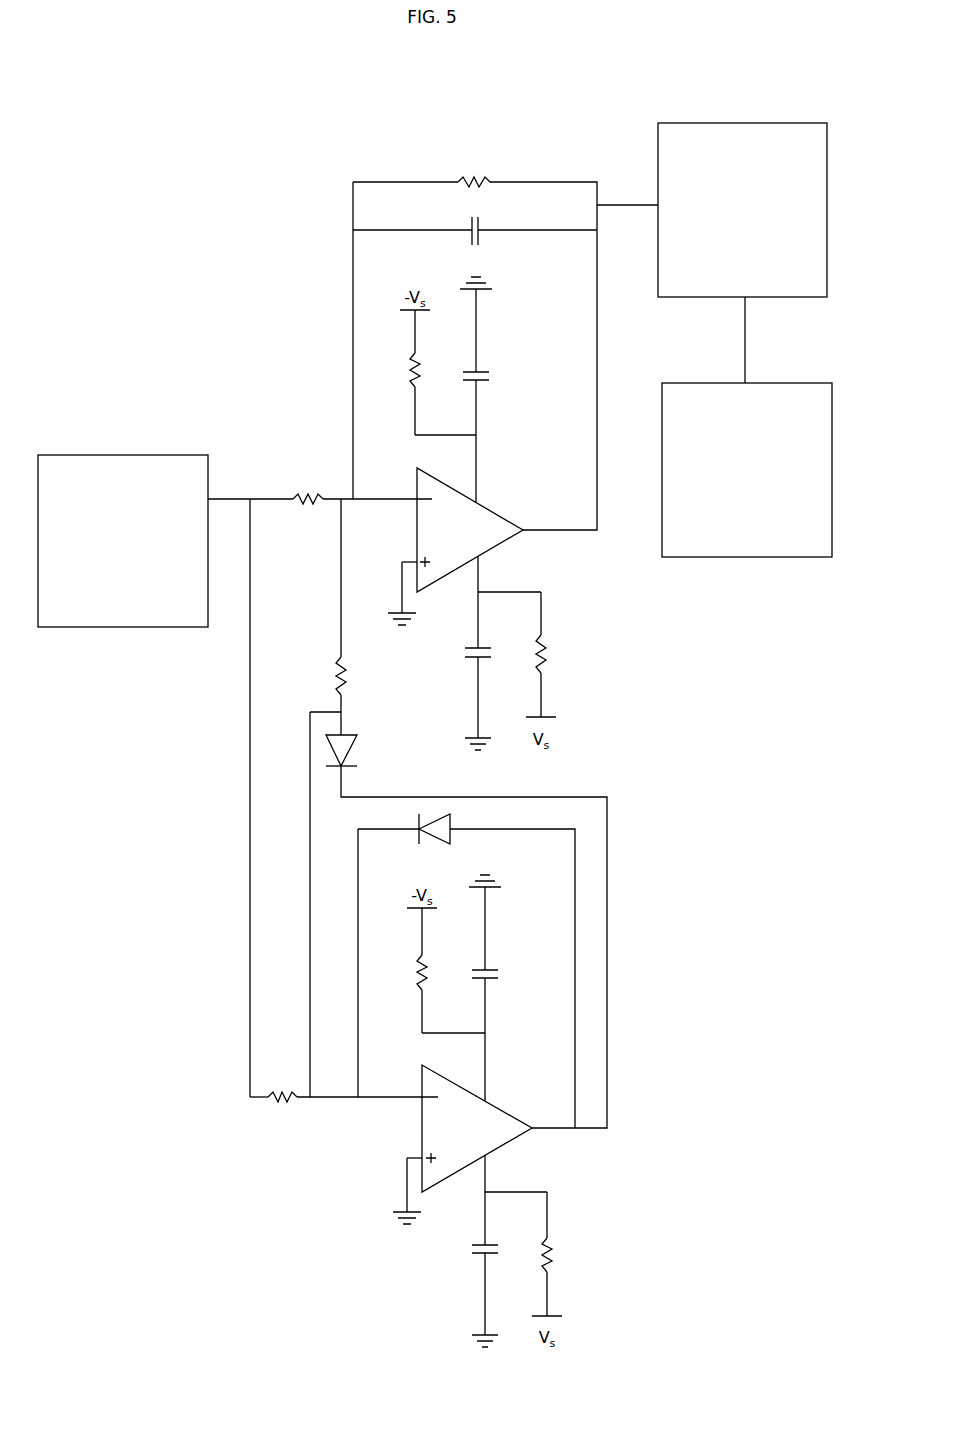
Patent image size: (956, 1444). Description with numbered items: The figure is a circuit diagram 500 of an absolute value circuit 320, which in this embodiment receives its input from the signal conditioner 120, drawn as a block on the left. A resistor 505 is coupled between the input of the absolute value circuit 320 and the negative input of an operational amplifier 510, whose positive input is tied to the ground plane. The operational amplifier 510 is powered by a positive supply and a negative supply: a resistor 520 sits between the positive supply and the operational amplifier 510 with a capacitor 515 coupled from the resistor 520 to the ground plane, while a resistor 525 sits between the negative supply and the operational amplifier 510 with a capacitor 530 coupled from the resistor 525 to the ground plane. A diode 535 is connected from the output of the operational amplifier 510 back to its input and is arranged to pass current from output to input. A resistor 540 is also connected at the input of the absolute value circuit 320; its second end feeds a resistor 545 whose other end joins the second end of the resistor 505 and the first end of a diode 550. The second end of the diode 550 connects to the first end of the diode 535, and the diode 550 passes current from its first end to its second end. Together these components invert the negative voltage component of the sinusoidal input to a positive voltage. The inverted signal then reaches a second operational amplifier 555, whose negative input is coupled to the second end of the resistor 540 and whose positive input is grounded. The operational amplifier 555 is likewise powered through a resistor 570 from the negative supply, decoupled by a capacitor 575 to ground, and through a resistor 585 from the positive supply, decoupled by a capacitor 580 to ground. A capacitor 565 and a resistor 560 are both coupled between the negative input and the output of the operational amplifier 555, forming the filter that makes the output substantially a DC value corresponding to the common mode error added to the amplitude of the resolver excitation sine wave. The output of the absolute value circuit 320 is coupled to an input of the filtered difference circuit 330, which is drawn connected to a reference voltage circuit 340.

The circuit diagram 500 is at (133, 65).
The signal conditioner 120 is at (123, 455).
The absolute value circuit 320 is at (252, 308).
The filtered difference circuit 330 is at (758, 123).
The reference voltage circuit 340 is at (760, 383).
The resistor 505 is at (295, 1103).
The operational amplifier 510 is at (500, 1108).
The capacitor 515 is at (483, 1256).
The resistor 520 is at (553, 1256).
The resistor 525 is at (416, 972).
The capacitor 530 is at (490, 979).
The diode 535 is at (440, 838).
The resistor 540 is at (307, 494).
The resistor 545 is at (336, 672).
The diode 550 is at (358, 745).
The operational amplifier 555 is at (498, 512).
The resistor 560 is at (477, 176).
The capacitor 565 is at (481, 238).
The resistor 570 is at (411, 378).
The capacitor 575 is at (489, 371).
The capacitor 580 is at (476, 659).
The resistor 585 is at (545, 660).